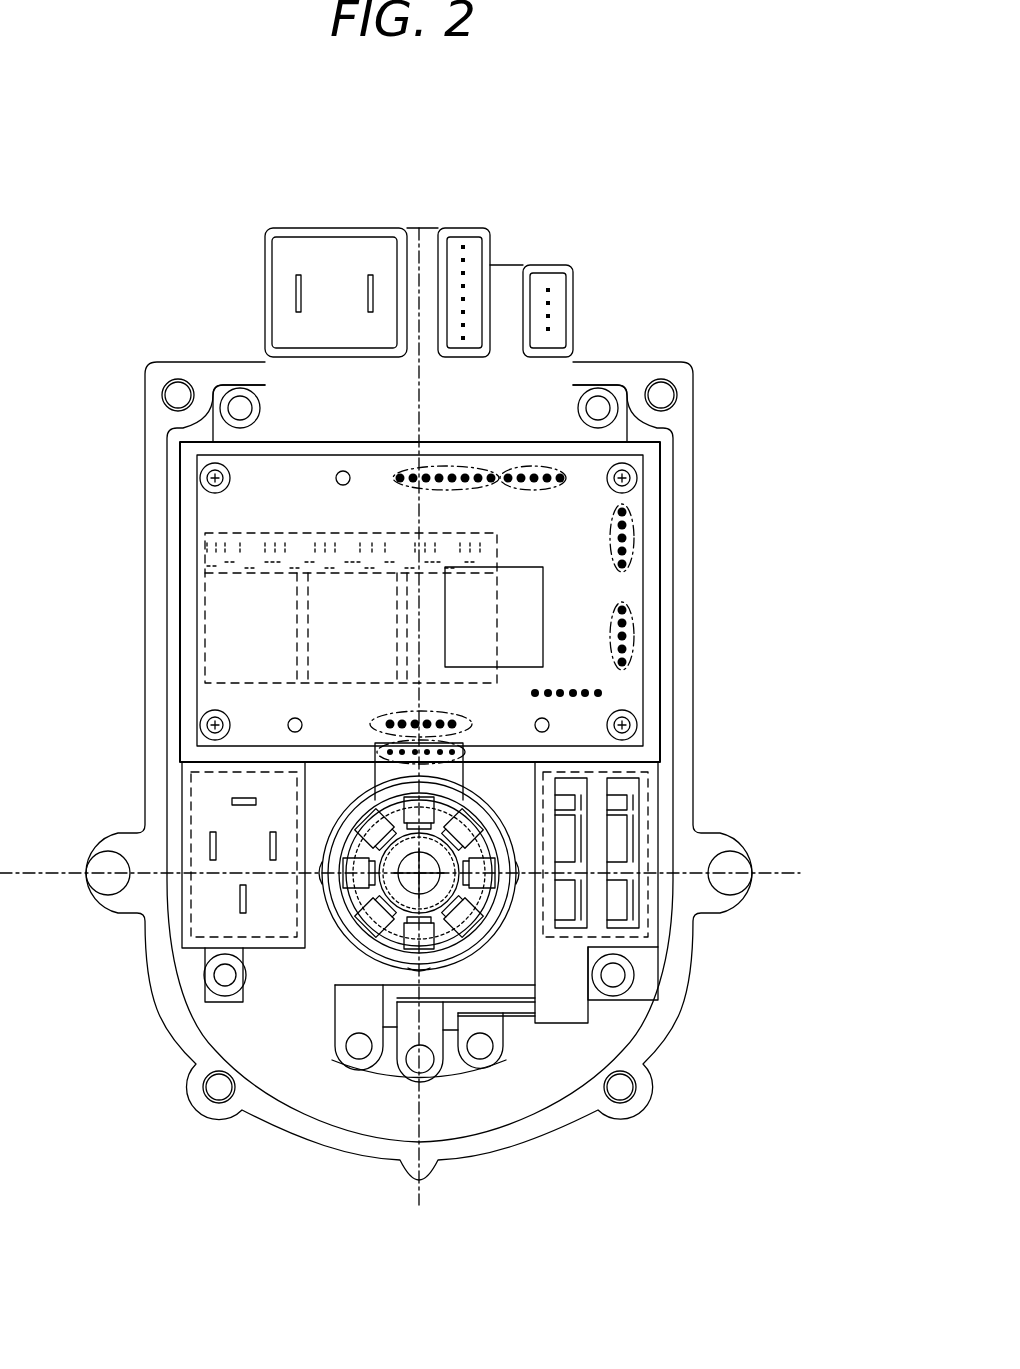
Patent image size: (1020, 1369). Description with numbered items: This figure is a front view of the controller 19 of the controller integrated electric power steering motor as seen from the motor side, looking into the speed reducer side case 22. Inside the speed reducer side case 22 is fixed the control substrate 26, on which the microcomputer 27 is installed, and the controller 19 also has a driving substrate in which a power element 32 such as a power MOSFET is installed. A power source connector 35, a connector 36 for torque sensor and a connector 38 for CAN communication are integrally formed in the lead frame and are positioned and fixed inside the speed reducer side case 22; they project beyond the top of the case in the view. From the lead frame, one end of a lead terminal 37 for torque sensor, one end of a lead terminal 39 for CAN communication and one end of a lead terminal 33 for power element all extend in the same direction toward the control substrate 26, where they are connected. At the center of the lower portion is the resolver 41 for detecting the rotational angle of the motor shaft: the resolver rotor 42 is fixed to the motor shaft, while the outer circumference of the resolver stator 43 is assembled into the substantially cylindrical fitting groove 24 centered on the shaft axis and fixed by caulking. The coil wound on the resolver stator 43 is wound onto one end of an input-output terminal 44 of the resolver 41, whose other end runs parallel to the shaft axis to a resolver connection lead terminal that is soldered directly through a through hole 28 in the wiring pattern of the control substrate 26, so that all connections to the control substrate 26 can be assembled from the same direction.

The controller 19 is at (425, 1255).
The speed reducer side case 22 is at (492, 1150).
The fitting groove 24 is at (493, 947).
The control substrate 26 is at (633, 700).
The microcomputer 27 is at (523, 610).
The through hole 28 is at (370, 725).
The power element 32 is at (232, 617).
The lead terminal for power element 33 is at (635, 522).
The power source connector 35 is at (300, 252).
The connector for torque sensor 36 is at (452, 252).
The lead terminal for torque sensor 37 is at (395, 486).
The connector for CAN communication 38 is at (540, 285).
The lead terminal for CAN communication 39 is at (547, 470).
The resolver 41 is at (363, 927).
The resolver rotor 42 is at (388, 885).
The resolver stator 43 is at (473, 802).
The input-output terminal 44 is at (370, 752).